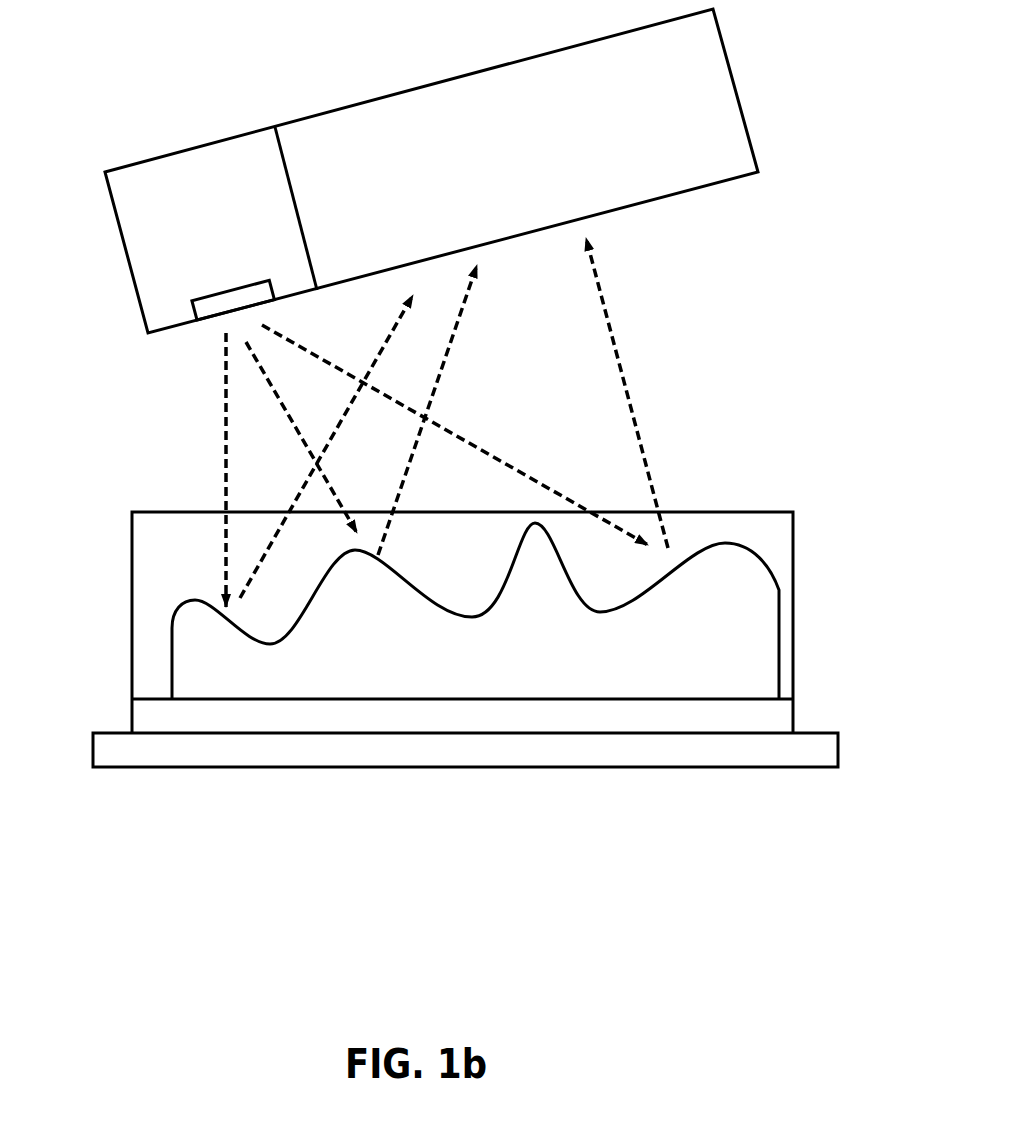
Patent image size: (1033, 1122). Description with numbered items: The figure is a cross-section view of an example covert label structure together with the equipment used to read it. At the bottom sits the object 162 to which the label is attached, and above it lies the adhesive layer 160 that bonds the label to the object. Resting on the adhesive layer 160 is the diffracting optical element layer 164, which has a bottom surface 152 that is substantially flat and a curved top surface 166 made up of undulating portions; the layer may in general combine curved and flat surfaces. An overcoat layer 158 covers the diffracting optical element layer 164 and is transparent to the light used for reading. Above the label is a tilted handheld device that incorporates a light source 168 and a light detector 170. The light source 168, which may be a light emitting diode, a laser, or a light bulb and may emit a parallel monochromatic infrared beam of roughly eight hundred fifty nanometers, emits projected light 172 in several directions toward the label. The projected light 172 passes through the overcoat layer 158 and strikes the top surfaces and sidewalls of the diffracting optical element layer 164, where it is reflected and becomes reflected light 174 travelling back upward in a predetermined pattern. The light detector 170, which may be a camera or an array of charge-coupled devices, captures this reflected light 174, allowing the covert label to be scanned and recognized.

The bottom surface 152 is at (618, 700).
The overcoat layer 158 is at (729, 512).
The adhesive layer 160 is at (147, 719).
The object 162 is at (170, 748).
The diffracting optical element layer 164 is at (199, 637).
The curved top surface 166 is at (457, 599).
The light source 168 is at (207, 313).
The light detector 170 is at (714, 172).
The projected light 172 is at (346, 374).
The reflected light 174 is at (392, 337).